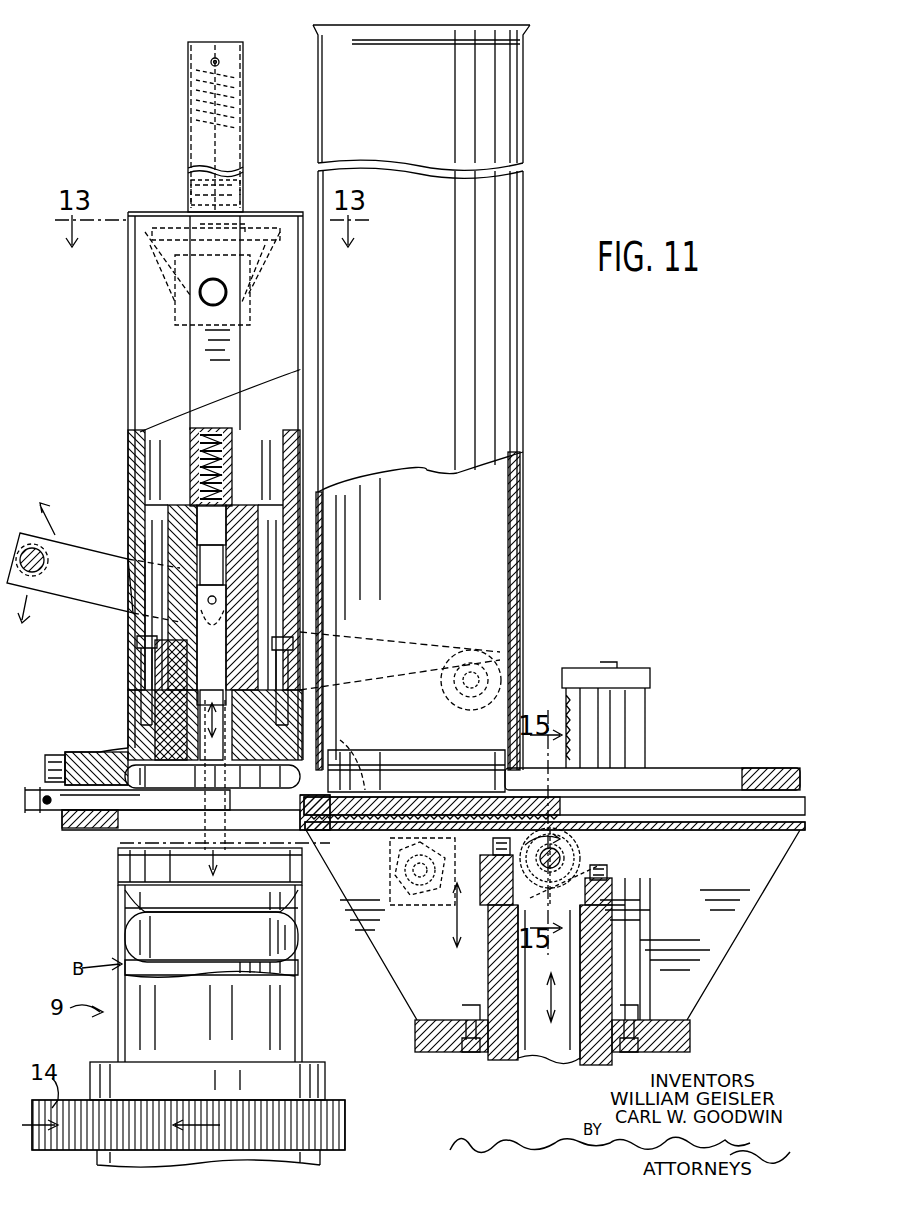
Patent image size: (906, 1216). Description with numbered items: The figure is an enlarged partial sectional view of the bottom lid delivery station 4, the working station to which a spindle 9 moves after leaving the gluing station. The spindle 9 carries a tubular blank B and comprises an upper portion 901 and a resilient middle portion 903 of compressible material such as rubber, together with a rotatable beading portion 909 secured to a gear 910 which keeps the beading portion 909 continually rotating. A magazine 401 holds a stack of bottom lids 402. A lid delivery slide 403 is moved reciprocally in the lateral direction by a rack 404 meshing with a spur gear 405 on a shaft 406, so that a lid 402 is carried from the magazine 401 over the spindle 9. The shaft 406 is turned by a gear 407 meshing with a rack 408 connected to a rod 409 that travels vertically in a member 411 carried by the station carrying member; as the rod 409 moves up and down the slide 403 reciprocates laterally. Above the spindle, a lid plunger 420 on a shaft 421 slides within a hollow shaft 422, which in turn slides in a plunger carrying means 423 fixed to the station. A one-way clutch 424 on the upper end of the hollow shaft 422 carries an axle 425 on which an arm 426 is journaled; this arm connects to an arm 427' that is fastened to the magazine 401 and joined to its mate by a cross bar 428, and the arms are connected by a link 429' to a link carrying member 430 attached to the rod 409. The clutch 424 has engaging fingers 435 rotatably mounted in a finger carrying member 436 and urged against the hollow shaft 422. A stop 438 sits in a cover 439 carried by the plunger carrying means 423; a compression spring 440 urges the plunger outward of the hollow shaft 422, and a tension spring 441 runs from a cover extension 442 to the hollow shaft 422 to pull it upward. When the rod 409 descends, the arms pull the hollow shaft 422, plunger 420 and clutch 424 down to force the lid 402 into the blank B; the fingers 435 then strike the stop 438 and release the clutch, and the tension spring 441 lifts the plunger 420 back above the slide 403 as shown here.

The base assembly 4 is at (566, 527).
The spindle 9 is at (210, 973).
The magazine 401 is at (497, 245).
The bottom lid 402 is at (120, 868).
The lid delivery slide 403 is at (365, 818).
The rack 404 is at (405, 838).
The spur gear 405 is at (592, 866).
The shaft 406 is at (585, 885).
The gear 407 is at (580, 845).
The rack 408 is at (566, 700).
The rod 409 is at (548, 1048).
The member 411 is at (492, 1045).
The lid plunger 420 is at (130, 752).
The shaft 421 is at (200, 700).
The hollow shaft 422 is at (185, 198).
The plunger carrying means 423 is at (170, 672).
The one-way clutch 424 is at (158, 311).
The axle 425 is at (213, 306).
The arm 426 is at (205, 378).
The arm 427' is at (271, 650).
The cross bar 428 is at (43, 553).
The link 429' is at (392, 756).
The link carrying member 430 is at (455, 900).
The engaging finger 435 is at (145, 236).
The finger carrying member 436 is at (152, 266).
The stop 438 is at (138, 452).
The cover 439 is at (132, 518).
The compression spring 440 is at (232, 452).
The tension spring 441 is at (187, 100).
The cover extension 442 is at (209, 62).
The upper portion 901 is at (130, 898).
The middle portion 903 is at (145, 940).
The beading portion 909 is at (320, 1080).
The gear 910 is at (330, 1120).
The tubular blank B is at (211, 967).